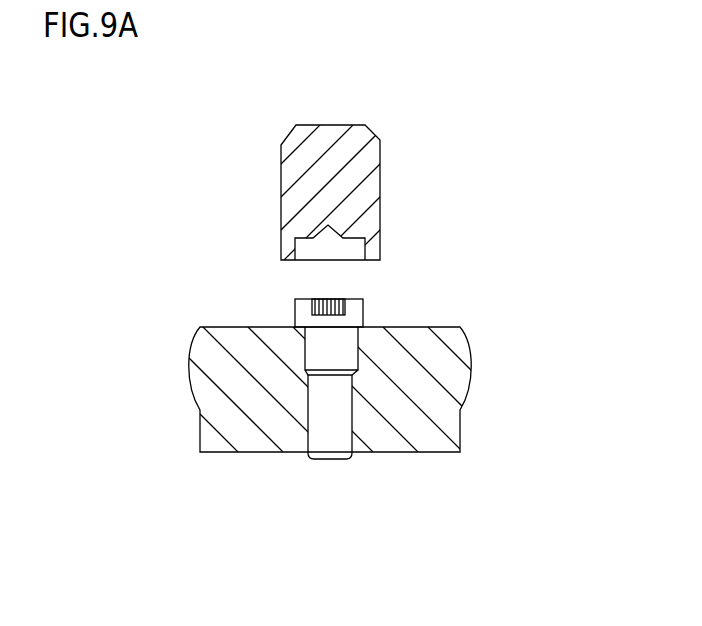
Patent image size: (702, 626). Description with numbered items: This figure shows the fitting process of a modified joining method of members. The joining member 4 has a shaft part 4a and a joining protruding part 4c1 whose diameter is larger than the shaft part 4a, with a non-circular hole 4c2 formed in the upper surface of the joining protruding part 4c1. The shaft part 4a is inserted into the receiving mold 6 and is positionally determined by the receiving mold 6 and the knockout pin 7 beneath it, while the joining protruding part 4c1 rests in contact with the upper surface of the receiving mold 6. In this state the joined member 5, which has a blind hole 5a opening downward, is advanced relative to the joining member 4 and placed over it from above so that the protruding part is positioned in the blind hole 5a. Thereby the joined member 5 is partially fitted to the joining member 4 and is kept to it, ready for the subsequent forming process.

The joined member 5 is at (365, 210).
The blind hole 5a is at (341, 250).
The joining member 4 is at (339, 386).
The shaft part 4a is at (318, 358).
The joining protruding part 4c1 is at (312, 315).
The non-circular hole 4c2 is at (322, 302).
The receiving mold 6 is at (443, 407).
The knockout pin 7 is at (327, 445).